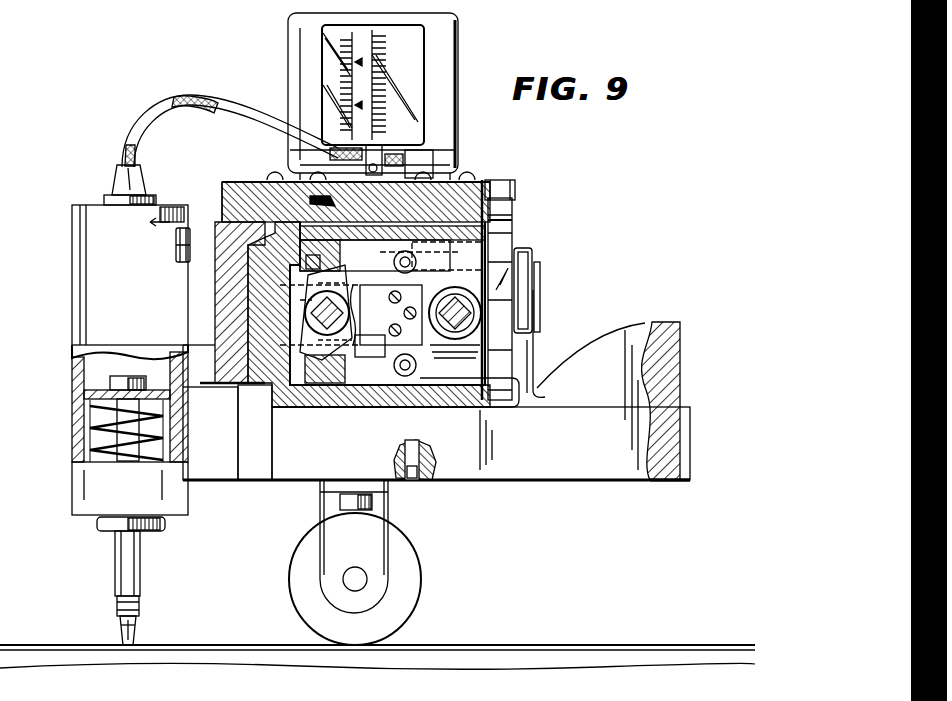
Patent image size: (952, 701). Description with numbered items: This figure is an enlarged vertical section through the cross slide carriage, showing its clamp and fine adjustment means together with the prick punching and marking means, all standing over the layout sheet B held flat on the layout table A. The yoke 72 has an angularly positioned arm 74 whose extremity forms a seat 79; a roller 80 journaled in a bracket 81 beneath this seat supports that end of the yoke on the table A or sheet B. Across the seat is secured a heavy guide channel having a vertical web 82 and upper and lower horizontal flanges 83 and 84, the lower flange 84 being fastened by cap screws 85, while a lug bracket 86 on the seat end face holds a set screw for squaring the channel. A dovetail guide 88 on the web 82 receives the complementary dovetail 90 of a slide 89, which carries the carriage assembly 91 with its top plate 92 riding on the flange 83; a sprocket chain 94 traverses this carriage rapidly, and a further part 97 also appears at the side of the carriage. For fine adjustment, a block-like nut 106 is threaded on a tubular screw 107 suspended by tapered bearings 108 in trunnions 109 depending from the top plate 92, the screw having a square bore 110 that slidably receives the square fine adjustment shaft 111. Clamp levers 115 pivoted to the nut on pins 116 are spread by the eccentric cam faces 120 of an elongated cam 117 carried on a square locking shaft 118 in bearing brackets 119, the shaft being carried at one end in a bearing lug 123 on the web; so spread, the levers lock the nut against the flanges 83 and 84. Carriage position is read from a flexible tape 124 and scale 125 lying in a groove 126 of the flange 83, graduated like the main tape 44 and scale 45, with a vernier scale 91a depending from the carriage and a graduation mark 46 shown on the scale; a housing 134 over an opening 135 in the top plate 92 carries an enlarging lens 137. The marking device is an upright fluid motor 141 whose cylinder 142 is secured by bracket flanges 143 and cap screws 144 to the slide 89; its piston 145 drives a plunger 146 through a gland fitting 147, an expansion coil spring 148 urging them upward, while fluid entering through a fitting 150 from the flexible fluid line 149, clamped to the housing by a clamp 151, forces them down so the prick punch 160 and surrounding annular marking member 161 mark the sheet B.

The housing 134 is at (446, 47).
The enlarging lens 137 is at (340, 46).
The scale mark 46 is at (386, 39).
The scale 45 is at (386, 84).
The main tape 44 is at (386, 126).
The clamp 151 is at (425, 142).
The opening 135 is at (452, 168).
The flexible tape 124 is at (422, 164).
The flexible fluid line 149 is at (192, 104).
The fitting 150 is at (118, 182).
The hydraulic or fluid motor 141 is at (74, 288).
The bracket flanges 143 is at (196, 222).
The cap screws 144 is at (177, 262).
The cylinder 142 is at (73, 338).
The piston 145 is at (72, 392).
The expansion coil spring 148 is at (73, 440).
The gland fitting 147 is at (150, 530).
The plunger 146 is at (116, 568).
The prick punch 160 is at (138, 636).
The annular marking member 161 is at (120, 638).
The upper horizontal flange 83 is at (288, 182).
The complementary dovetail 90 is at (262, 190).
The carriage assembly 91 is at (222, 182).
The vernier scale 91a is at (392, 211).
The slide 89 is at (214, 222).
The dovetail guide 88 is at (236, 387).
The vertical web 82 is at (262, 404).
The lug bracket 86 is at (250, 482).
The bearing lug 123 is at (312, 400).
The seat 79 is at (462, 440).
The bracket 97 is at (527, 346).
The yoke 72 is at (651, 320).
The angularly positioned arm 74 is at (660, 482).
The lower horizontal flange 84 is at (420, 404).
The clamp levers 115 is at (392, 265).
The scale 125 is at (431, 250).
The pins 116 is at (416, 262).
The square locking shaft 118 is at (318, 360).
The elongated cam 117 is at (338, 360).
The bearing brackets 119 is at (300, 318).
The eccentric cam faces 120 is at (318, 176).
The tubular screw 107 is at (468, 296).
The square bore 110 is at (463, 318).
The fine adjustment shaft 111 is at (448, 340).
The nut 106 is at (462, 372).
The trunnions 109 is at (512, 256).
The tapered bearings 108 is at (515, 278).
The sprocket chain 94 is at (512, 224).
The groove 126 is at (508, 212).
The top plate 92 is at (490, 180).
The cap screws 85 is at (410, 482).
The bracket 81 is at (322, 556).
The roller 80 is at (412, 583).
The layout sheet B is at (490, 644).
The layout table A is at (600, 665).